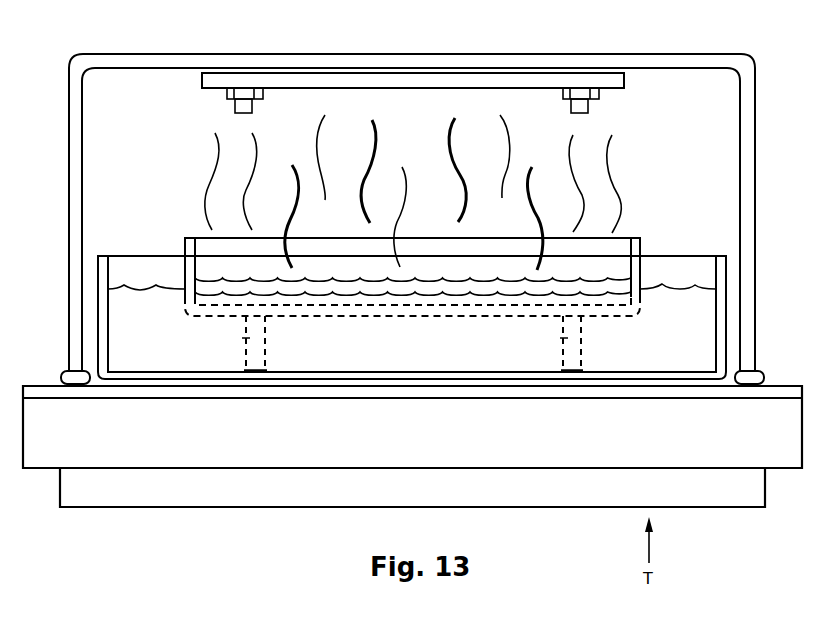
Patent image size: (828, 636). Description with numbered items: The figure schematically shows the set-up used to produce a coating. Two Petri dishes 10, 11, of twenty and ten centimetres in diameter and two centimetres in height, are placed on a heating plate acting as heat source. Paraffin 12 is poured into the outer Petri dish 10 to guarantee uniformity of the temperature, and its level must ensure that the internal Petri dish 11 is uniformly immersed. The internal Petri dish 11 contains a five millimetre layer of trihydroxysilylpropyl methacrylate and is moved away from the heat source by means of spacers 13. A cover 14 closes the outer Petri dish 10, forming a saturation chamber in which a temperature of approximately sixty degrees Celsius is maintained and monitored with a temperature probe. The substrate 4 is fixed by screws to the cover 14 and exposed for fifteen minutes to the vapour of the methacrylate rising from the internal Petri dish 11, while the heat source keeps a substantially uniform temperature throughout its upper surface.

The cover 14 is at (692, 60).
The substrate 4 is at (303, 80).
The Petri dish 10 is at (719, 277).
The paraffin 12 is at (147, 303).
The internal Petri dish 11 is at (636, 246).
The spacers 13 is at (241, 340).